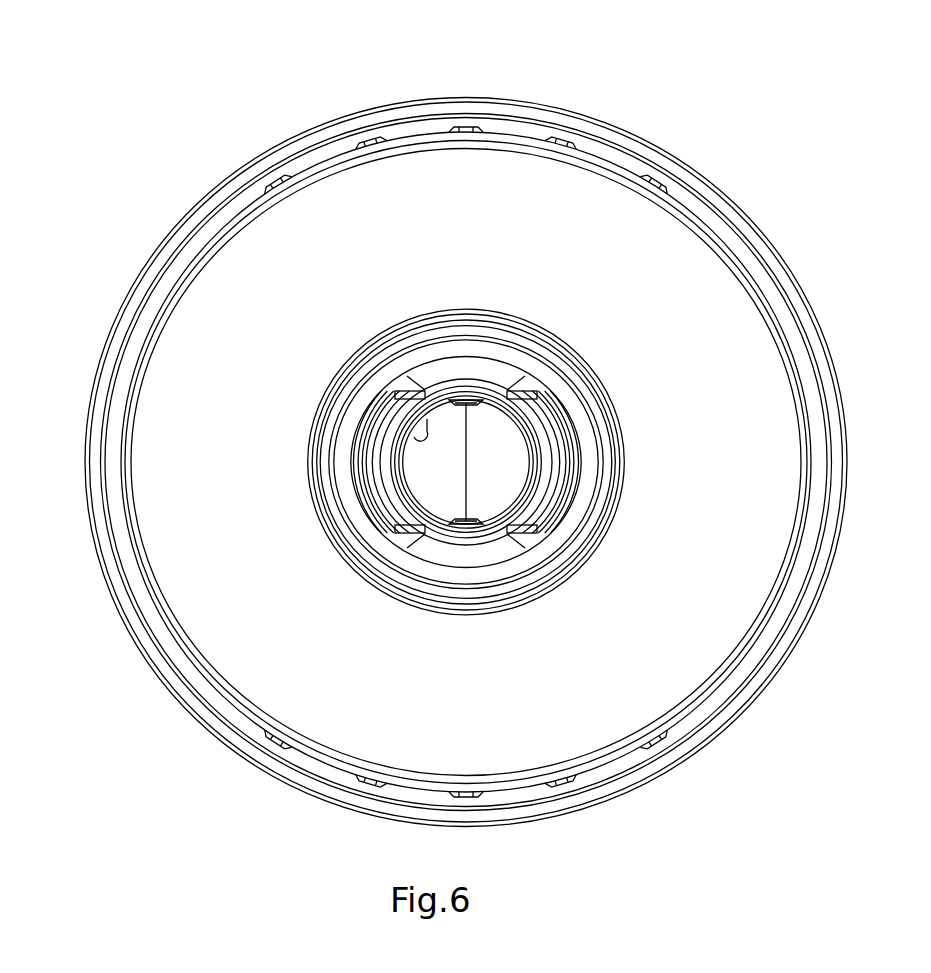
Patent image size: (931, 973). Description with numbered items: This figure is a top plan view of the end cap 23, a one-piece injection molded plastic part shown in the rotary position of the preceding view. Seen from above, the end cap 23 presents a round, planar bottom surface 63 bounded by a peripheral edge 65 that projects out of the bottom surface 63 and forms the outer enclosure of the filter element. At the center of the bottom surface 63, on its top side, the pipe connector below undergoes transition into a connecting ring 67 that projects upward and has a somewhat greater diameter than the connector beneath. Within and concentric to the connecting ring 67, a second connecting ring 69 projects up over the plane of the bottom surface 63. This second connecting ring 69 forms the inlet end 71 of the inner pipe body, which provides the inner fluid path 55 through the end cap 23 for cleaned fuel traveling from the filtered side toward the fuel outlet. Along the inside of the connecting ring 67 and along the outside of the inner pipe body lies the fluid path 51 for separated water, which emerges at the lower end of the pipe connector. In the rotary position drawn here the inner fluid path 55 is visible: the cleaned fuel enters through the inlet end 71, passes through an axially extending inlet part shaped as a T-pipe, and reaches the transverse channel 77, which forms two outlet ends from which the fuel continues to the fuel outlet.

The end cap 23 is at (237, 152).
The bottom surface 63 is at (500, 173).
The peripheral edge 65 is at (157, 272).
The connecting ring 67 is at (380, 335).
The fluid path 51 is at (480, 368).
The inner fluid path 55 is at (508, 436).
The inlet end 71 is at (414, 437).
The second connecting ring 69 is at (407, 520).
The transverse channel 77 is at (467, 464).